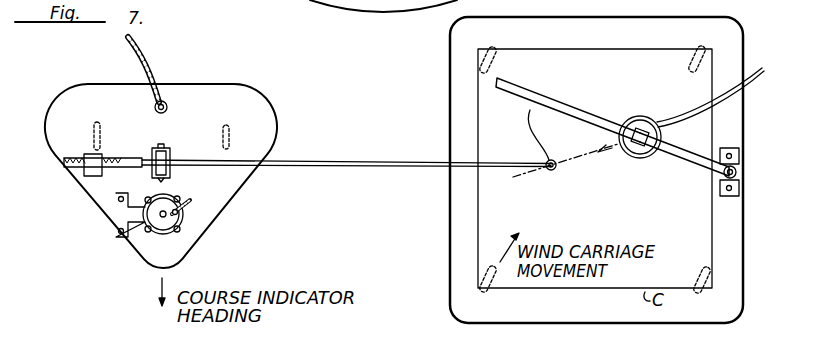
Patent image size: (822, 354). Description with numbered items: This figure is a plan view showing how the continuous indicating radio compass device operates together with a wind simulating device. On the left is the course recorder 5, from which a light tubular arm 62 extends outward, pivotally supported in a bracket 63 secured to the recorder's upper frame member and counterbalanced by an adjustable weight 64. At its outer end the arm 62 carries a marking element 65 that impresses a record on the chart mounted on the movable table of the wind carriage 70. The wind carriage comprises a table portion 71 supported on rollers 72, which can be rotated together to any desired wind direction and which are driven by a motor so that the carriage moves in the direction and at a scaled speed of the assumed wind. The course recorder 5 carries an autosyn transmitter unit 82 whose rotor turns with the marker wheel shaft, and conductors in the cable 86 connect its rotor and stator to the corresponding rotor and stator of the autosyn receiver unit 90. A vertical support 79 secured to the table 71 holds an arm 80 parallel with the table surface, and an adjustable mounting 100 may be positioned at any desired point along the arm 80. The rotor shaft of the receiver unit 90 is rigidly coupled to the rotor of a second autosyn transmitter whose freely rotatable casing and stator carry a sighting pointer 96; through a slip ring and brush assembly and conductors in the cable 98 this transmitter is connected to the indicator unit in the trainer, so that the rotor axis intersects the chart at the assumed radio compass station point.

The course recorder 5 is at (279, 119).
The light tubular arm 62 is at (310, 163).
The bracket 63 is at (170, 151).
The adjustable weight 64 is at (100, 155).
The marking element 65 is at (552, 171).
The wind carriage 70 is at (448, 96).
The table portion 71 is at (452, 232).
The rollers 72 is at (498, 47).
The vertical support 79 is at (740, 161).
The arm 80 is at (671, 148).
The autosyn transmitter unit 82 is at (178, 212).
The cable 86 is at (192, 198).
The autosyn receiver unit 90 is at (645, 160).
The sighting pointer 96 is at (604, 152).
The cable 98 is at (694, 88).
The adjustable mounting 100 is at (641, 124).